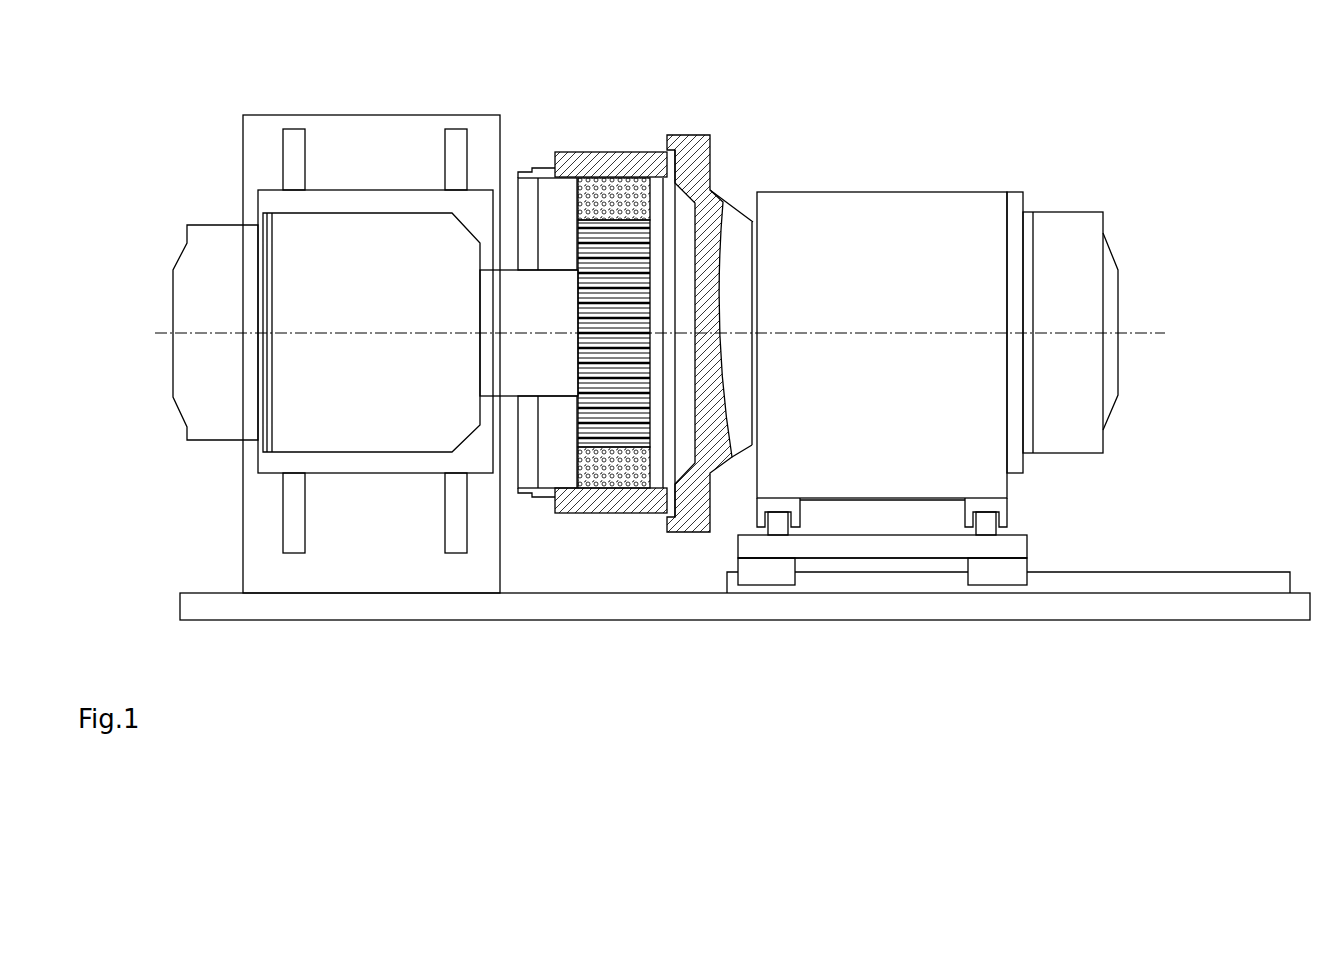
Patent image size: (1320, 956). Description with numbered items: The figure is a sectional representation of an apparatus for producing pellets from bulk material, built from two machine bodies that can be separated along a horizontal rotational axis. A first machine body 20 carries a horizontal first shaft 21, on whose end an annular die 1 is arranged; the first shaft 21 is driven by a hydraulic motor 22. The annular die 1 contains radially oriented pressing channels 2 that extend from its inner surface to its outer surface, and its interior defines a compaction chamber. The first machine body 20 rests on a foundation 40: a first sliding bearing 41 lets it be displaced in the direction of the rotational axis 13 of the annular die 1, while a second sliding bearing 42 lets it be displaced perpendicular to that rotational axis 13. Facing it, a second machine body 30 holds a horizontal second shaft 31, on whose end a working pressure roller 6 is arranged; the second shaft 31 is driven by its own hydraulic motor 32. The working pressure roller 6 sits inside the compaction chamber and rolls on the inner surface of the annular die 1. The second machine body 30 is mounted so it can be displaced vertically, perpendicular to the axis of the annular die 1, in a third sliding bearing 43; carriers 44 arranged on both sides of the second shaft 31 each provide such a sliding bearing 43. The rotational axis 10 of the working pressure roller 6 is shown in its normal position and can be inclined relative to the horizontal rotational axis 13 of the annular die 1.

The annular die 1 is at (612, 163).
The pressing channels 2 is at (625, 182).
The working pressure roller 6 is at (620, 405).
The rotational axis of the working pressure roller 10 is at (215, 330).
The rotational axis of the annular die 13 is at (1073, 333).
The first machine body 20 is at (925, 143).
The first shaft 21 is at (733, 228).
The hydraulic motor 22 is at (1078, 233).
The second machine body 30 is at (343, 157).
The second shaft 31 is at (547, 300).
The hydraulic motor 32 is at (213, 243).
The foundation 40 is at (455, 612).
The first sliding bearing 41 is at (1087, 583).
The second sliding bearing 42 is at (990, 520).
The third sliding bearing 43 is at (455, 157).
The carriers 44 is at (255, 152).